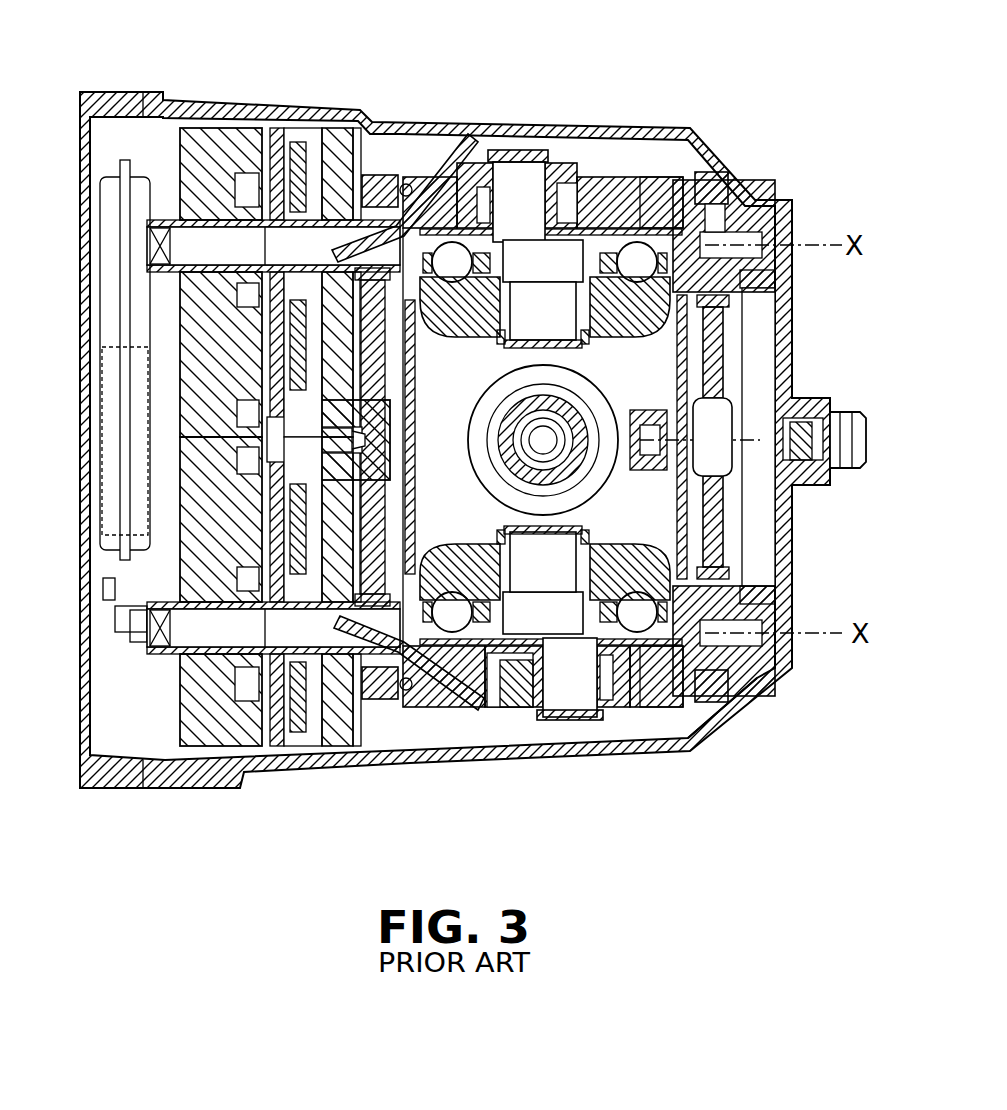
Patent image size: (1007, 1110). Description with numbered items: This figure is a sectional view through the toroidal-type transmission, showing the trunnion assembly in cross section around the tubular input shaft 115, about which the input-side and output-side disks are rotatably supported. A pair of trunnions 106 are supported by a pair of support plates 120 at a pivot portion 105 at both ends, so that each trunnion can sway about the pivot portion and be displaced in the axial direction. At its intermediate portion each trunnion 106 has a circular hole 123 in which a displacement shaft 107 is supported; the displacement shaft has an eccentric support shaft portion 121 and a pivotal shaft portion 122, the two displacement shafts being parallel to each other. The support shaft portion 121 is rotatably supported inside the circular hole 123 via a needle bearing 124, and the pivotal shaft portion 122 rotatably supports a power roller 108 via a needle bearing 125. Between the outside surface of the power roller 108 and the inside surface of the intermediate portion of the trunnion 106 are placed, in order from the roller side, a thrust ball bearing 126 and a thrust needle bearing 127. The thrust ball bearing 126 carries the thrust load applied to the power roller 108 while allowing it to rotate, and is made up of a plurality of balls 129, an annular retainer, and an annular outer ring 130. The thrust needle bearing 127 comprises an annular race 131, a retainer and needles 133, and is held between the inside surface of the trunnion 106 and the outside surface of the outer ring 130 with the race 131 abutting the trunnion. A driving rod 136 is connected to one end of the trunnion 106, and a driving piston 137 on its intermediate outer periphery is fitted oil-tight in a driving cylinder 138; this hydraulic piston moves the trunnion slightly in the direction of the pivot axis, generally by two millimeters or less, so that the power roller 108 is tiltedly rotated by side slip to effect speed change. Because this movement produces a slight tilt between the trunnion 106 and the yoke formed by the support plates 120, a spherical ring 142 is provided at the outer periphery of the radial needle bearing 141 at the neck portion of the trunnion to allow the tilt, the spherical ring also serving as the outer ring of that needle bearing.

The pivot portion 105 is at (362, 182).
The trunnion 106 is at (676, 196).
The displacement shaft 107 is at (566, 276).
The power roller 108 is at (705, 315).
The input shaft 115 is at (505, 444).
The support plate 120 is at (407, 503).
The support shaft portion 121 is at (517, 175).
The pivotal shaft portion 122 is at (557, 325).
The circular hole 123 is at (481, 235).
The needle bearing 124 is at (540, 150).
The needle bearing 125 is at (500, 313).
The thrust ball bearing 126 is at (648, 215).
The thrust needle bearing 127 is at (585, 170).
The balls 129 is at (452, 245).
The outer ring 130 is at (660, 200).
The race 131 is at (612, 176).
The needles 133 is at (422, 192).
The driving rod 136 is at (207, 243).
The driving piston 137 is at (300, 150).
The driving cylinder 138 is at (270, 140).
The radial needle bearing 141 is at (705, 690).
The spherical ring 142 is at (718, 174).